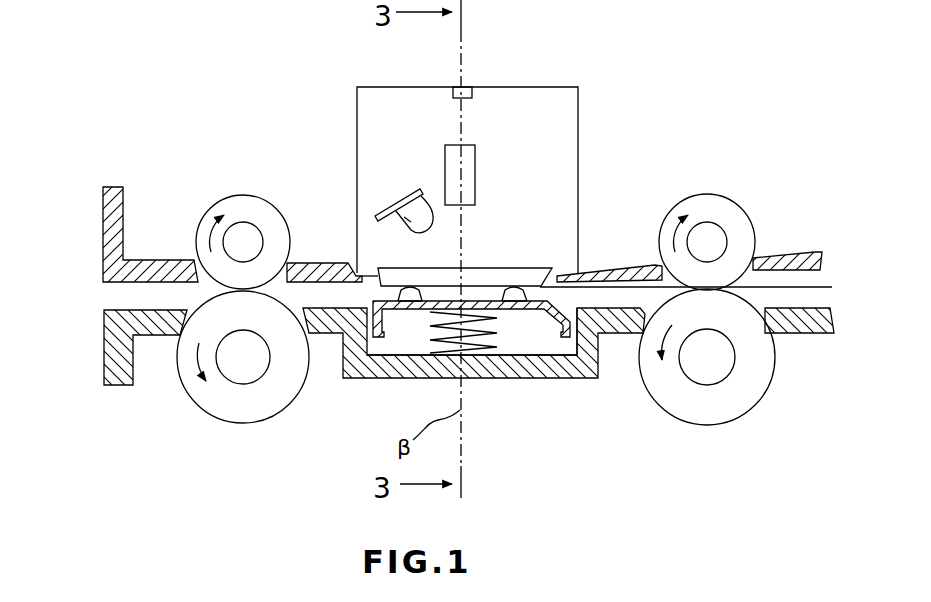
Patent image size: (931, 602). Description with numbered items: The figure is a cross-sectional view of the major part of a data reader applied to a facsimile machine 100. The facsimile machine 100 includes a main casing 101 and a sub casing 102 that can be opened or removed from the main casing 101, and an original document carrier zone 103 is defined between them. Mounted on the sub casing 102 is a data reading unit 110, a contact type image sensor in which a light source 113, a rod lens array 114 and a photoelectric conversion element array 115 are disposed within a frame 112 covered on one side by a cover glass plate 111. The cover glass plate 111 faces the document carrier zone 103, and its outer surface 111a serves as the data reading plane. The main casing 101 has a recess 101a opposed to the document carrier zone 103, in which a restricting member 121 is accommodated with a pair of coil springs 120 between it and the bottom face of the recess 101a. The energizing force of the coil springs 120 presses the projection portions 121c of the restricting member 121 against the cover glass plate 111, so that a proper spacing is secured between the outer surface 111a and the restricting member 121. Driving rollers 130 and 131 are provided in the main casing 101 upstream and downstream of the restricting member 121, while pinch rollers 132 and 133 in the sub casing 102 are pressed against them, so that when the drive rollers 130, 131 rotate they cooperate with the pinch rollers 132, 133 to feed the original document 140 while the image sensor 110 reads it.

The facsimile machine 100 is at (712, 94).
The main casing 101 is at (133, 356).
The recess 101a is at (575, 348).
The sub casing 102 is at (130, 222).
The original document carrier zone 103 is at (116, 297).
The data reading unit 110 is at (348, 116).
The cover glass plate 111 is at (534, 270).
The outer surface 111a is at (507, 290).
The frame 112 is at (580, 88).
The light source 113 is at (403, 231).
The rod lens array 114 is at (453, 155).
The photoelectric conversion element array 115 is at (467, 88).
The coil springs 120 is at (489, 305).
The restricting member 121 is at (549, 308).
The projection portions 121c is at (492, 300).
The driving roller 130 is at (724, 408).
The driving roller 131 is at (213, 402).
The pinch roller 132 is at (727, 213).
The pinch roller 133 is at (232, 204).
The original document 140 is at (778, 287).